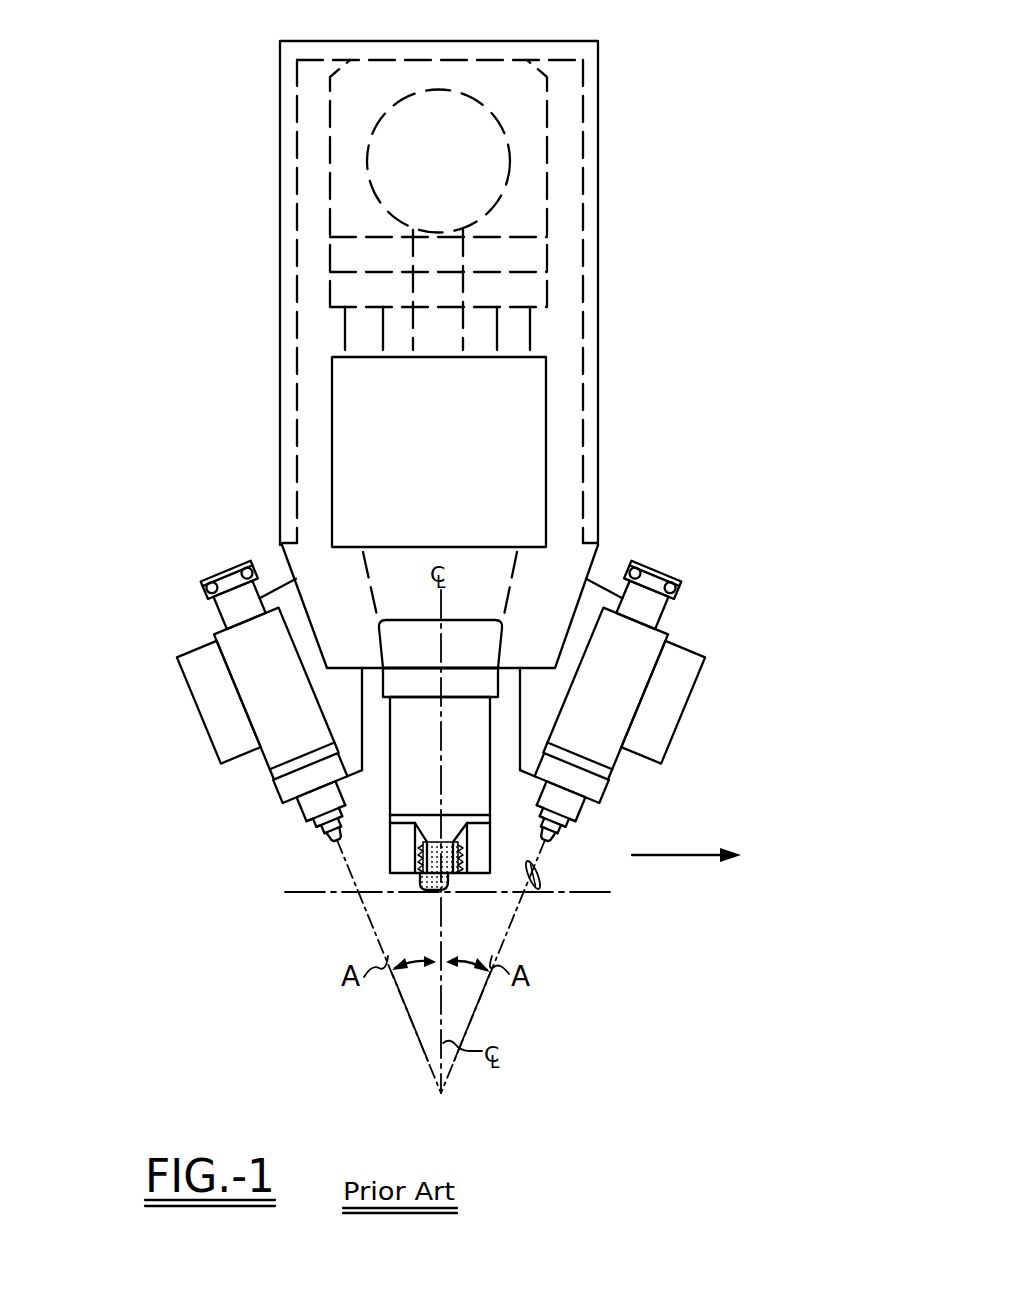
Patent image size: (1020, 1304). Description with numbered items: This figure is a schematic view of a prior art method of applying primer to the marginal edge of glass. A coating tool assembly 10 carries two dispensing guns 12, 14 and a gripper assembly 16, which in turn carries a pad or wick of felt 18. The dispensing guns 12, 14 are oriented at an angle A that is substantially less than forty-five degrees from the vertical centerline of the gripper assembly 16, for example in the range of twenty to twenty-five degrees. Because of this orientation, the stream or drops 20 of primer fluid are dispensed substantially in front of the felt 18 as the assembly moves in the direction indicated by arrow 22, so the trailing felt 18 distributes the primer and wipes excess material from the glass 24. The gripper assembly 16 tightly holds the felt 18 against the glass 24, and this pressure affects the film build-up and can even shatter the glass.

The coating tool assembly 10 is at (255, 245).
The dispensing gun 12 is at (195, 692).
The dispensing gun 14 is at (678, 702).
The gripper assembly 16 is at (370, 859).
The pad or wick of felt 18 is at (433, 892).
The stream or drops of fluid 20 is at (538, 878).
The arrow indicating direction of movement 22 is at (712, 855).
The glass 24 is at (578, 891).